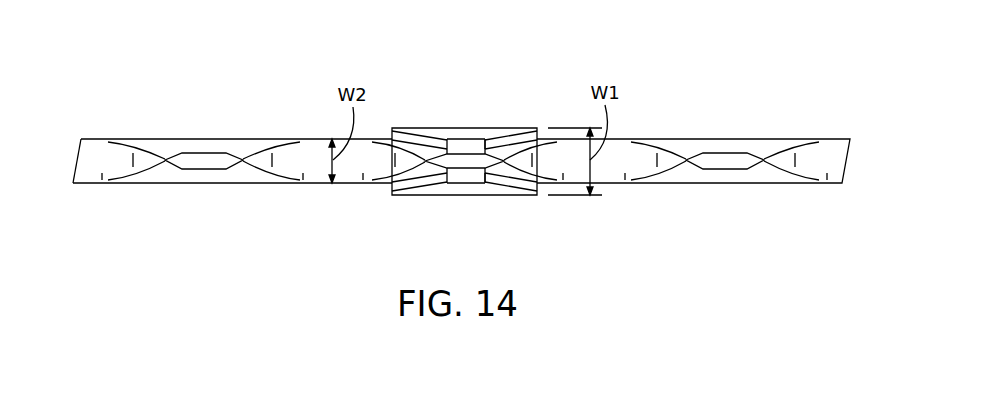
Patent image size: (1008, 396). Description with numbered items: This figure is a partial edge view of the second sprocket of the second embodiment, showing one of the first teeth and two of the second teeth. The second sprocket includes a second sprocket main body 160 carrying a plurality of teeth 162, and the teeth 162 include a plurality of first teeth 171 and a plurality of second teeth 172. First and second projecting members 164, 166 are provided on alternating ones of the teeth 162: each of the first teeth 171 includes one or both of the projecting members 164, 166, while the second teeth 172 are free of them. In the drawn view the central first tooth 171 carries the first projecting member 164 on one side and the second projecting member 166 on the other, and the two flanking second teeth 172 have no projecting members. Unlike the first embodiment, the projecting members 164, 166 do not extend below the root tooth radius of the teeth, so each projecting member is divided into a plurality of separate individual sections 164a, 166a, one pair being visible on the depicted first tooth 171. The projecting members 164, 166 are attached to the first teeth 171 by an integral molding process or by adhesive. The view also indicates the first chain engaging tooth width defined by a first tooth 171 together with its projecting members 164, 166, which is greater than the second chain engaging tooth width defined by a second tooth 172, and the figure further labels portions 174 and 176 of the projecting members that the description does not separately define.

The second sprocket main body 160 is at (167, 138).
The teeth 162 is at (170, 218).
The first projecting member 164 is at (415, 199).
The separate individual sections 164a is at (460, 188).
The second projecting member 166 is at (412, 128).
The separate individual sections 166a is at (448, 133).
The first teeth 171 is at (467, 162).
The second teeth 172 is at (204, 160).
The lower tab 174 is at (507, 172).
The upper tab 176 is at (498, 148).